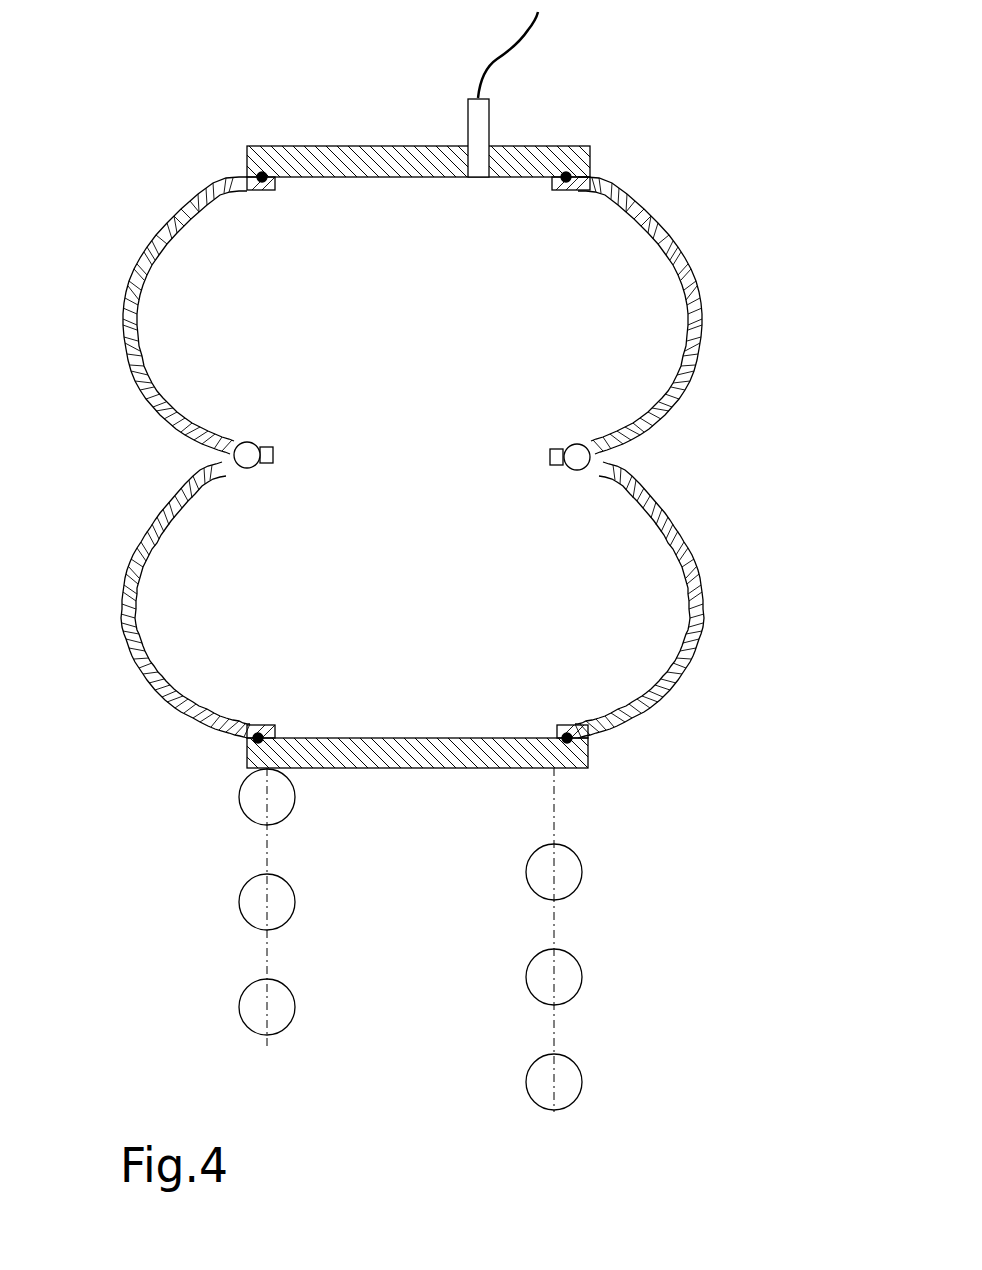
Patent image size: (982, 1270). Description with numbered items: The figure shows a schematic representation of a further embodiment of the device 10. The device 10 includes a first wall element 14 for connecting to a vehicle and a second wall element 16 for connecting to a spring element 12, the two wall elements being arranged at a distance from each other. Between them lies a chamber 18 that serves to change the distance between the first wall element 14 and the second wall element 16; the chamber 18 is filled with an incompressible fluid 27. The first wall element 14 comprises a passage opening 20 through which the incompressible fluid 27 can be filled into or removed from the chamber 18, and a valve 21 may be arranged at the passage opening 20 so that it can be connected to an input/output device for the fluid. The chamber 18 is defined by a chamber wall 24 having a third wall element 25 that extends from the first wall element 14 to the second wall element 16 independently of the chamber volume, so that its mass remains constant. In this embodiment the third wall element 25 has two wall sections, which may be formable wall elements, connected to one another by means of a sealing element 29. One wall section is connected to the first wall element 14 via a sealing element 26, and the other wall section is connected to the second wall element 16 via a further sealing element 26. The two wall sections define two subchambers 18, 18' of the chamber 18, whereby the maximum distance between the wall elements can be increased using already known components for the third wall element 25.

The device 10 is at (762, 233).
The spring element 12 is at (240, 905).
The first wall element 14 is at (318, 143).
The second wall element 16 is at (247, 753).
The chamber 18 is at (660, 315).
The subchamber 18' is at (661, 600).
The passage opening 20 is at (487, 178).
The valve 21 is at (492, 122).
The chamber wall 24 is at (150, 370).
The third wall element 25 is at (170, 208).
The sealing element 26 is at (250, 175).
The incompressible fluid 27 is at (420, 448).
The sealing element 29 is at (248, 457).